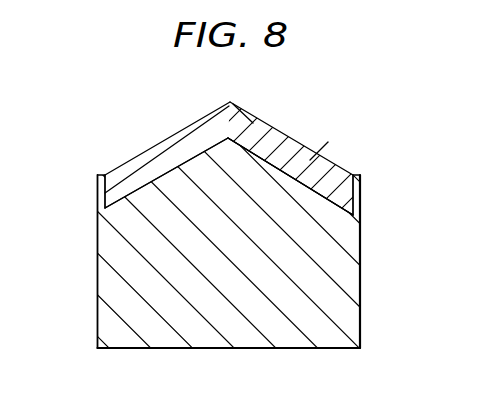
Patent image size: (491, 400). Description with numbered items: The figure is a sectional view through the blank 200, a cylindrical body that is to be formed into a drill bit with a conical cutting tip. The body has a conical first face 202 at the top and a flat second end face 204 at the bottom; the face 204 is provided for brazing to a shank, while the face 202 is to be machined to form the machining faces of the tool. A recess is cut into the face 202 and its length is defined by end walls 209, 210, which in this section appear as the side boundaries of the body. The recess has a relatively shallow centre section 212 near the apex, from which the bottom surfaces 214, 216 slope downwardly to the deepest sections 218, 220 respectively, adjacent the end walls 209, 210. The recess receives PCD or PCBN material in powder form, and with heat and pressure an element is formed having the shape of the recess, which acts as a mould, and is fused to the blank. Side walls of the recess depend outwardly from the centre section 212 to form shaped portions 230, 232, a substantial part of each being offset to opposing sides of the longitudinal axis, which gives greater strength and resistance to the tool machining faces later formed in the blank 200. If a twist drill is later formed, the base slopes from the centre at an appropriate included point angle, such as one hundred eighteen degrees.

The blank 200 is at (335, 312).
The conical first face 202 is at (238, 106).
The flat second end face 204 is at (322, 350).
The end wall 209 is at (97, 177).
The end wall 210 is at (360, 194).
The centre section 212 is at (250, 135).
The bottom surface 214 is at (128, 187).
The bottom surface 216 is at (310, 183).
The deepest section 218 is at (104, 209).
The deepest section 220 is at (353, 200).
The shaped portion 230 is at (163, 145).
The shaped portion 232 is at (323, 172).